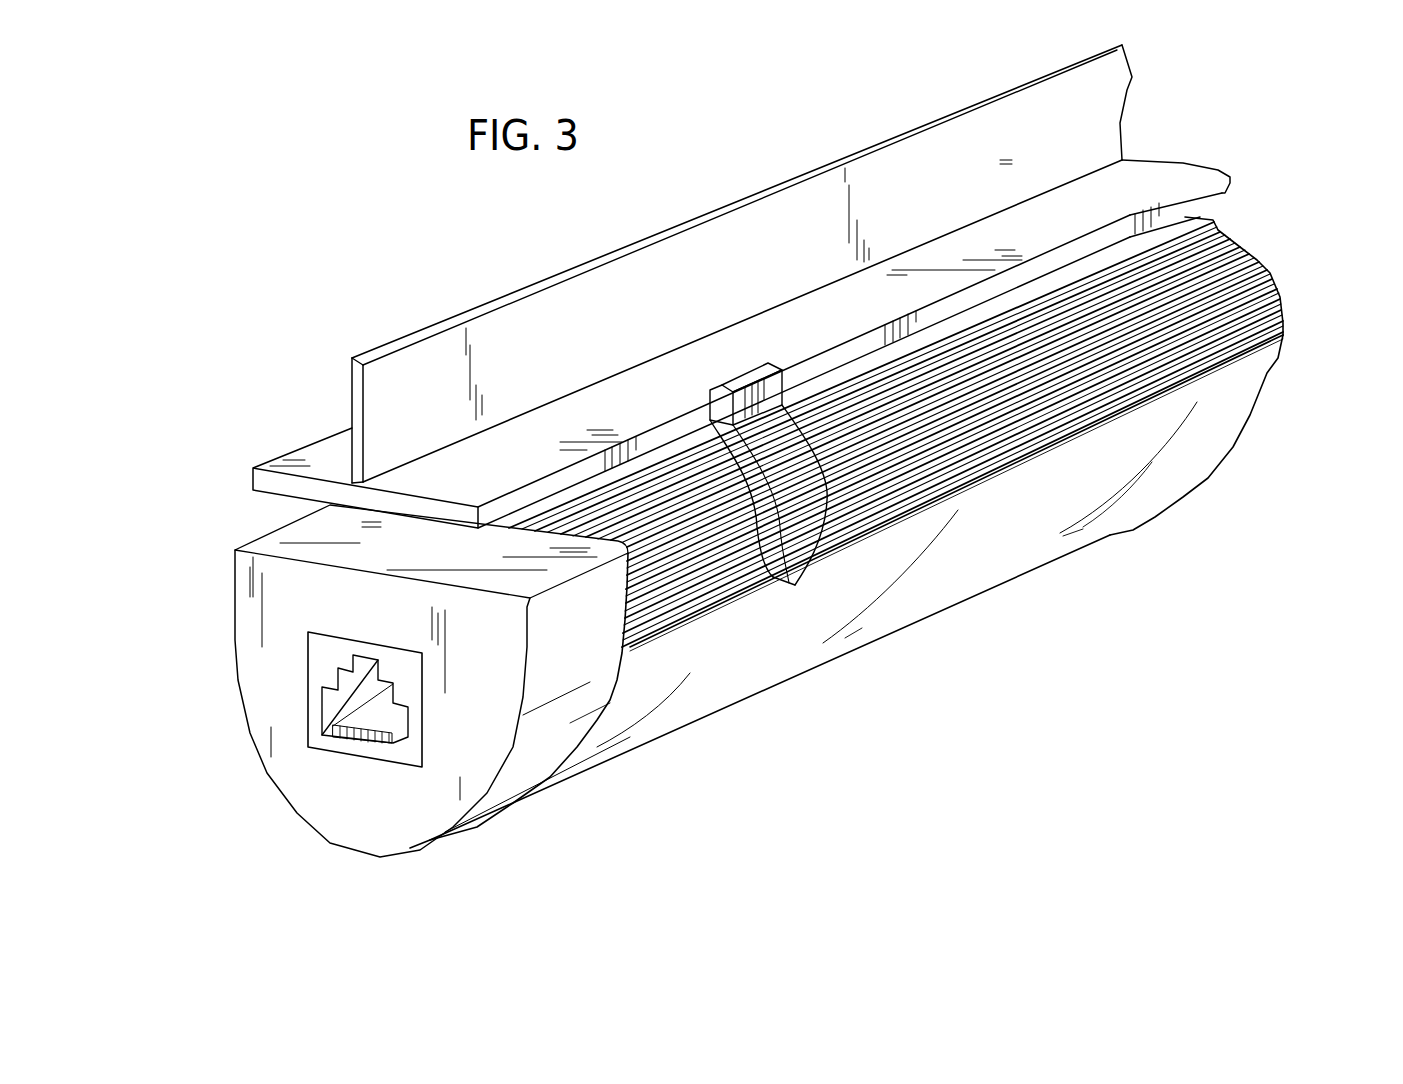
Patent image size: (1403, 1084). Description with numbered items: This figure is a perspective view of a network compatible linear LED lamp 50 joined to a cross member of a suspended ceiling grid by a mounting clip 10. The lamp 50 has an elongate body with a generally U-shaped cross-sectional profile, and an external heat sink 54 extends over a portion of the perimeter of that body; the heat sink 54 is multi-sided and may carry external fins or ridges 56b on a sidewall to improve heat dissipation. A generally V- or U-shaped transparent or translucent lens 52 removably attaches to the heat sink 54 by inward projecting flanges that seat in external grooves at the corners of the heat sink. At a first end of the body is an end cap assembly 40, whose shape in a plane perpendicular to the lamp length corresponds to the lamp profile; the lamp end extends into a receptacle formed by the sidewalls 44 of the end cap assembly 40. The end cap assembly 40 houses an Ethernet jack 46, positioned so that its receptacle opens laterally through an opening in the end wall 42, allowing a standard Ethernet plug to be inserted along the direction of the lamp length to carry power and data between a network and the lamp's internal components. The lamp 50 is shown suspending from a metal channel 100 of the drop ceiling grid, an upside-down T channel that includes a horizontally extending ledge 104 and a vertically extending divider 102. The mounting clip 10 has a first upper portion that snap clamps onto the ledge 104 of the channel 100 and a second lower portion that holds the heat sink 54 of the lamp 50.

The mounting clip 10 is at (754, 553).
The end cap assembly 40 is at (236, 688).
The end wall 42 is at (330, 815).
The sidewalls 44 is at (570, 708).
The Ethernet jack 46 is at (418, 757).
The linear LED lamp 50 is at (980, 599).
The lens 52 is at (1200, 443).
The external heat sink 54 is at (1260, 293).
The external fins or ridges 56b is at (1284, 292).
The metal channel 100 is at (709, 315).
The vertically extending divider 102 is at (402, 363).
The horizontally extending ledge 104 is at (313, 462).